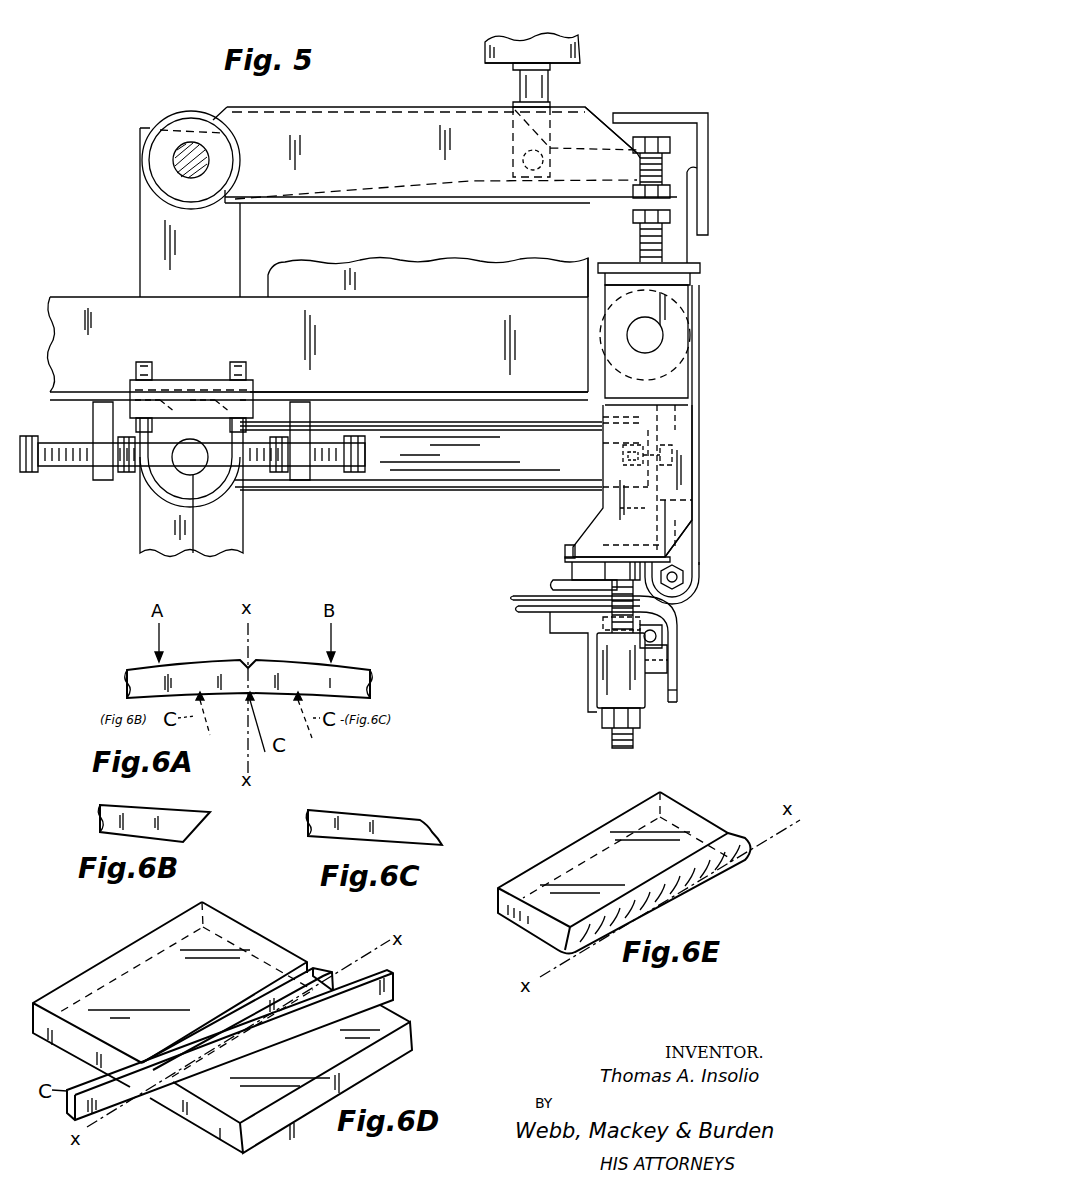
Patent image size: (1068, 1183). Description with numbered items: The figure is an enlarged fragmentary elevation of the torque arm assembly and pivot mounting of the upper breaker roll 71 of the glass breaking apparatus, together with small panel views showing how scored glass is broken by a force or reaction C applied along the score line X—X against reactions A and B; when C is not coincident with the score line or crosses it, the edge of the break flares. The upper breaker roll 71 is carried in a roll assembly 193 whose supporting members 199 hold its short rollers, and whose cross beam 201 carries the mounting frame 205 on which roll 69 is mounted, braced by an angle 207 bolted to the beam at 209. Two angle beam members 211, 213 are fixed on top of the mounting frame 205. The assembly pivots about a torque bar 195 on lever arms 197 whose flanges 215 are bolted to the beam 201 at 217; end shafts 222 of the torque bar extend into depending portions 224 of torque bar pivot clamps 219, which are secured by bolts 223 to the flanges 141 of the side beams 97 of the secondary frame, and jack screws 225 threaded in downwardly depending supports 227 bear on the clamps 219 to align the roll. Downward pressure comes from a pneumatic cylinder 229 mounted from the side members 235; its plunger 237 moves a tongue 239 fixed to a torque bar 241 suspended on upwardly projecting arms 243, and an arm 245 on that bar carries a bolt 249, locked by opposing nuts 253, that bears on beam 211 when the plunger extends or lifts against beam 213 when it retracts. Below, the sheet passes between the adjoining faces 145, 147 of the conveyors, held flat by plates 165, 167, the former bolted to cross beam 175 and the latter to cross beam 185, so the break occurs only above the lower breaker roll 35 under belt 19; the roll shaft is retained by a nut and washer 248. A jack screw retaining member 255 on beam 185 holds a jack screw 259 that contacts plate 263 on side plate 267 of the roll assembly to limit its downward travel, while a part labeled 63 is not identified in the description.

The belt 19 is at (680, 688).
The breaker roller 35 is at (680, 660).
The pivot pin 63 is at (700, 446).
The roll 69 is at (698, 331).
The upper breaker roll 71 is at (700, 566).
The side beams 97 is at (52, 350).
The flanges 141 is at (405, 392).
The upper adjoining face 145 is at (513, 598).
The lower adjoining face 147 is at (520, 609).
The plate 165 is at (553, 584).
The plate 167 is at (550, 623).
The cross beam 175 is at (572, 567).
The cross beam 185 is at (597, 690).
The roll assembly 193 is at (698, 485).
The torque bar 195 is at (162, 505).
The lever arms 197 is at (461, 492).
The supporting members 199 is at (700, 560).
The cross beam 201 is at (665, 512).
The mounting frame 205 is at (690, 386).
The angle 207 is at (692, 428).
The bolt 209 is at (692, 461).
The angle beam member 211 is at (697, 245).
The angle beam member 213 is at (688, 116).
The flanges 215 is at (603, 508).
The bolts 217 is at (603, 458).
The torque bar pivot clamps 219 is at (130, 385).
The end shafts 222 is at (200, 470).
The bolts 223 is at (140, 368).
The depending portions 224 is at (193, 553).
The jack screws 225 is at (33, 474).
The downwardly depending supports 227 is at (103, 483).
The pneumatic cylinder 229 is at (582, 50).
The side members 235 is at (385, 260).
The plunger 237 is at (518, 88).
The tongue 239 is at (588, 153).
The torque bar 241 is at (180, 110).
The upwardly projecting arms 243 is at (140, 236).
The arm 245 is at (358, 105).
The nut and washer 248 is at (686, 582).
The bolt 249 is at (640, 240).
The opposing nuts 253 is at (672, 218).
The jack screw retaining member 255 is at (645, 700).
The jack screw 259 is at (660, 611).
The plate 263 is at (566, 553).
The side plate 267 is at (690, 536).